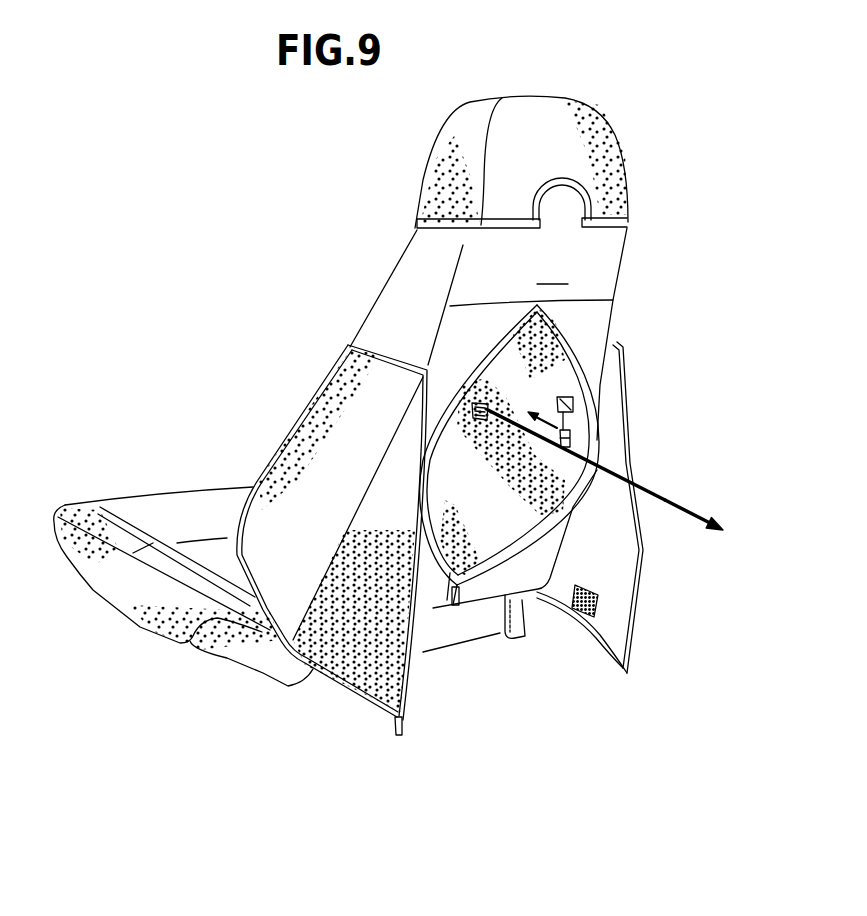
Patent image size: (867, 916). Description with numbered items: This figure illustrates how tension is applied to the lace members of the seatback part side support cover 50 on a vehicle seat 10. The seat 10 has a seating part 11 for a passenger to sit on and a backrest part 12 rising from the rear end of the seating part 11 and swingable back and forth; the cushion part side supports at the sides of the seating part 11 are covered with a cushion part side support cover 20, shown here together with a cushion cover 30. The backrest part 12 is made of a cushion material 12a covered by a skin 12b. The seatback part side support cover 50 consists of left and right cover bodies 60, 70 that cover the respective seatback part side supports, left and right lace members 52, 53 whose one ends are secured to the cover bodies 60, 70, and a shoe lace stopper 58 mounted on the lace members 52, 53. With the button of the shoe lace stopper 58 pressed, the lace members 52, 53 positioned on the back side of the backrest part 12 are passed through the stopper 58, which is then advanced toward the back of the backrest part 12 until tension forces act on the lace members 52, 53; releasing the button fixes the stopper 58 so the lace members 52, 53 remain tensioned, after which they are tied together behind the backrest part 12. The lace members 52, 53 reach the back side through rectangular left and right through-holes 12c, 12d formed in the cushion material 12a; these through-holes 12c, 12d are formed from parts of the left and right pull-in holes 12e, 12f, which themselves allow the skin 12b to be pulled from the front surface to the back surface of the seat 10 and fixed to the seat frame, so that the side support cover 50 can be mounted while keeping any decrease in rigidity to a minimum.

The vehicle seat 10 is at (162, 107).
The seating part 11 is at (192, 510).
The backrest part 12 is at (592, 267).
The cushion material 12a is at (500, 521).
The skin 12b is at (486, 286).
The left through-hole 12c is at (488, 407).
The right through-hole 12d is at (565, 397).
The left pull-in hole 12e is at (387, 350).
The right pull-in hole 12f is at (652, 371).
The cushion part side support cover 20 is at (62, 503).
The cushion cover 30 is at (164, 545).
The seatback part side support cover 50 is at (441, 570).
The left lace member 52 is at (660, 500).
The right lace member 53 is at (665, 490).
The shoe lace stopper 58 is at (572, 432).
The left cover body 60 is at (357, 684).
The right cover body 70 is at (606, 634).